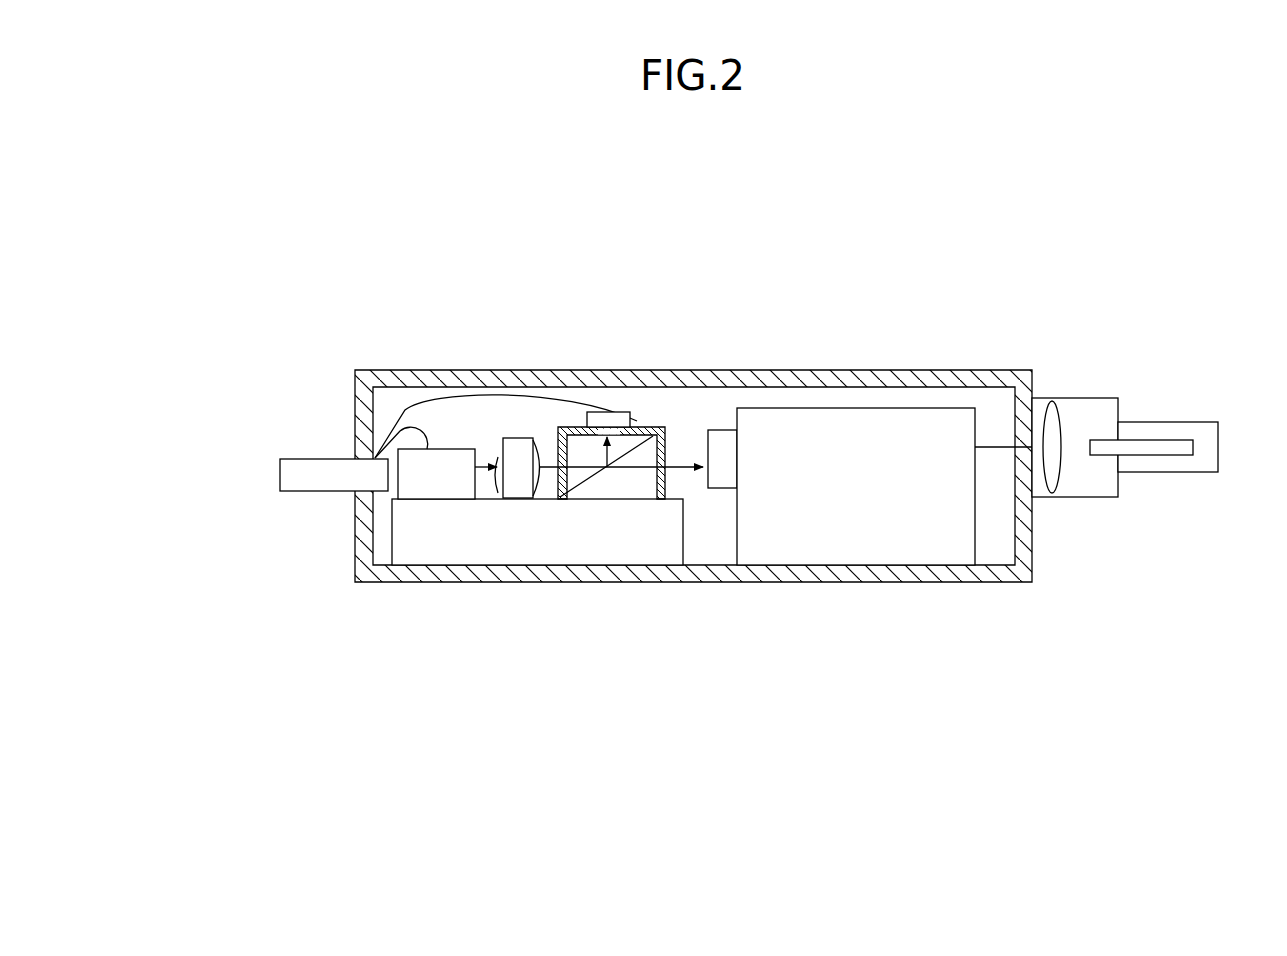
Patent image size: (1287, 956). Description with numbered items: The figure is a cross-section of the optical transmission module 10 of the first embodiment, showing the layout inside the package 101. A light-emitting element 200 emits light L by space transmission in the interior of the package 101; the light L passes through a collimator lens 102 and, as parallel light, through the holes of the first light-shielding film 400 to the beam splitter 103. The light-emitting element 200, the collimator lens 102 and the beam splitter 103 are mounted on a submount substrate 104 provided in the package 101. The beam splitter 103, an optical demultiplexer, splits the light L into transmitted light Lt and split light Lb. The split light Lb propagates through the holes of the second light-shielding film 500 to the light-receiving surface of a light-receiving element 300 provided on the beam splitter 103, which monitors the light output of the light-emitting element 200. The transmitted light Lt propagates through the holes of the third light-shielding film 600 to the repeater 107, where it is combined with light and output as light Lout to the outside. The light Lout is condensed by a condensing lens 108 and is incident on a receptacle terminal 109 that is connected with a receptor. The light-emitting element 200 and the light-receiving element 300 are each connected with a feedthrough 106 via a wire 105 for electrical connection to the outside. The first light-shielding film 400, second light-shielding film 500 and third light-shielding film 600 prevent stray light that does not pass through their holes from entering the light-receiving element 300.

The optical transmission module 10 is at (936, 266).
The package 101 is at (368, 370).
The collimator lens 102 is at (515, 438).
The beam splitter 103 is at (643, 480).
The submount substrate 104 is at (683, 540).
The wire 105 is at (408, 427).
The feedthrough 106 is at (280, 476).
The repeater 107 is at (977, 530).
The condensing lens 108 is at (1060, 465).
The receptacle terminal 109 is at (1168, 440).
The light-emitting element 200 is at (393, 495).
The light-receiving element 300 is at (636, 424).
The first light-shielding film 400 is at (560, 497).
The second light-shielding film 500 is at (573, 425).
The third light-shielding film 600 is at (665, 478).
The light L is at (483, 475).
The split light Lb is at (606, 440).
The transmitted light Lt is at (635, 472).
The light Lout is at (997, 443).